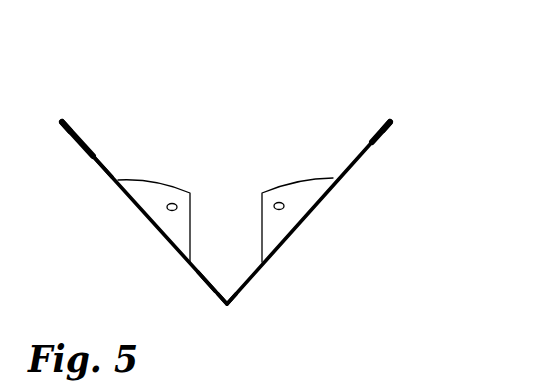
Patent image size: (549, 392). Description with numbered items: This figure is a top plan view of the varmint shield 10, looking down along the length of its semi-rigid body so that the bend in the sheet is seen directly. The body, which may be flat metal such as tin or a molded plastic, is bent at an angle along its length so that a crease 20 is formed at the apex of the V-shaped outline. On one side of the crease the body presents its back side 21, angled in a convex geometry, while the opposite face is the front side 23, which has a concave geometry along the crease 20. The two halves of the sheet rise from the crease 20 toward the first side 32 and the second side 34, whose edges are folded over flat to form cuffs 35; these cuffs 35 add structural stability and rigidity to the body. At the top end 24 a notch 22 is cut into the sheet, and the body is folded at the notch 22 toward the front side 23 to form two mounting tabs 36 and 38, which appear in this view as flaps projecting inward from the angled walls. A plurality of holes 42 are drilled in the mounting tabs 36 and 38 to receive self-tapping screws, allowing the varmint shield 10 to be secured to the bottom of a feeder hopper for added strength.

The varmint shield 10 is at (226, 157).
The crease 20 is at (228, 310).
The back side 21 is at (94, 167).
The notch 22 is at (207, 278).
The front side 23 is at (92, 156).
The top end 24 is at (343, 176).
The first side 32 is at (390, 118).
The second side 34 is at (63, 118).
The cuffs 35 is at (67, 138).
The mounting tab 36 is at (290, 187).
The mounting tab 38 is at (155, 188).
The holes 42 is at (170, 213).